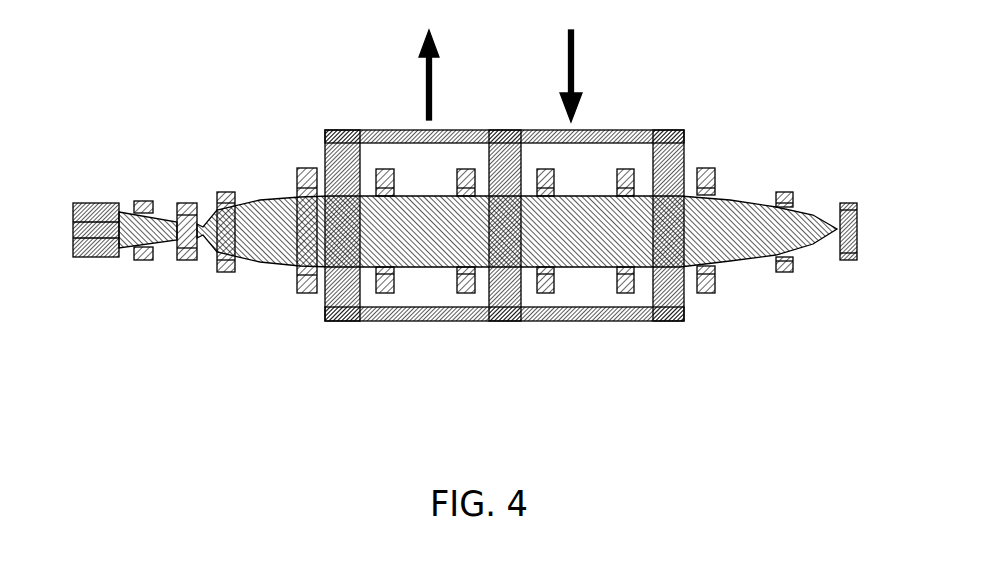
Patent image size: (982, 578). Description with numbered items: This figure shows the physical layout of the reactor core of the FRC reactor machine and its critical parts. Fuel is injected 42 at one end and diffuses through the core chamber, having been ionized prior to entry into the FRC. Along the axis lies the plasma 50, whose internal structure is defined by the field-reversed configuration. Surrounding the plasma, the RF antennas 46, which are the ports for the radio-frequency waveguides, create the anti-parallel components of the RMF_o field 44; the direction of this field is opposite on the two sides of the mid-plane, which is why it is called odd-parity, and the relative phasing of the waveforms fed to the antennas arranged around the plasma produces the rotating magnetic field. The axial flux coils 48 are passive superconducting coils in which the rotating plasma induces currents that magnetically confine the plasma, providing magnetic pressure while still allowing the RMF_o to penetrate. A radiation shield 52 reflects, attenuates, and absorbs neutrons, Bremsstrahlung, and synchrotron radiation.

The fuel injection 42 is at (93, 202).
The RMF_o field 44 is at (563, 40).
The RF antennas 46 is at (658, 132).
The axial flux coils 48 is at (617, 290).
The plasma 50 is at (567, 237).
The radiation shield 52 is at (445, 265).